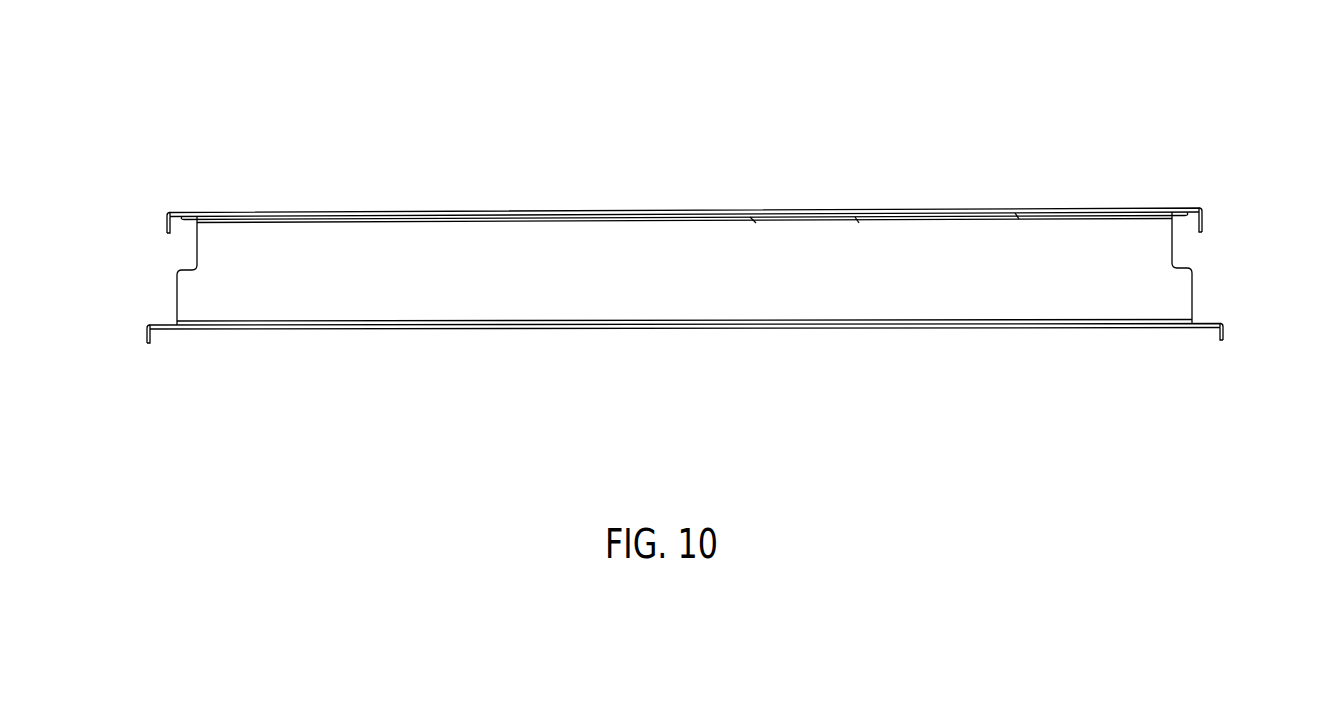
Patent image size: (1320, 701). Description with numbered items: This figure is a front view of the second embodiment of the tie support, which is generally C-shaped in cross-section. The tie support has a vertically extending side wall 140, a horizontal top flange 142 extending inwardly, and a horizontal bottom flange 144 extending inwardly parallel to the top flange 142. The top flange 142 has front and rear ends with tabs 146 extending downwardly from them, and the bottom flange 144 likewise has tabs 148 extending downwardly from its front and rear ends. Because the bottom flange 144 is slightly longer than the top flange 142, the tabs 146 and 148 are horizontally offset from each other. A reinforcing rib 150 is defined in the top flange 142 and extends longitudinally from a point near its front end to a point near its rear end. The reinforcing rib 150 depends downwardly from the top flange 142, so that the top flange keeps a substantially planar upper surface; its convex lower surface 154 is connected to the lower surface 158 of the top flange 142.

The side wall 140 is at (495, 285).
The top flange 142 is at (620, 209).
The bottom flange 144 is at (677, 329).
The tabs 146 is at (162, 228).
The tabs 148 is at (143, 340).
The reinforcing rib 150 is at (752, 222).
The convex lower surface 154 is at (857, 222).
The lower surface 158 is at (1017, 217).